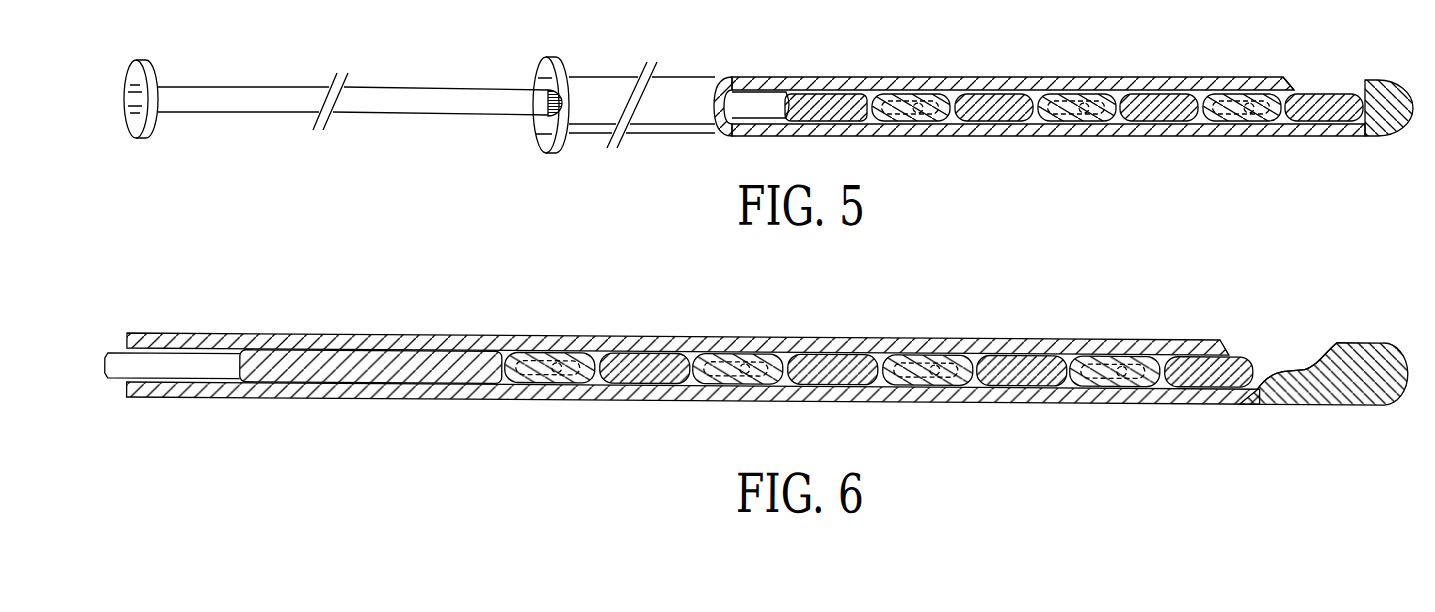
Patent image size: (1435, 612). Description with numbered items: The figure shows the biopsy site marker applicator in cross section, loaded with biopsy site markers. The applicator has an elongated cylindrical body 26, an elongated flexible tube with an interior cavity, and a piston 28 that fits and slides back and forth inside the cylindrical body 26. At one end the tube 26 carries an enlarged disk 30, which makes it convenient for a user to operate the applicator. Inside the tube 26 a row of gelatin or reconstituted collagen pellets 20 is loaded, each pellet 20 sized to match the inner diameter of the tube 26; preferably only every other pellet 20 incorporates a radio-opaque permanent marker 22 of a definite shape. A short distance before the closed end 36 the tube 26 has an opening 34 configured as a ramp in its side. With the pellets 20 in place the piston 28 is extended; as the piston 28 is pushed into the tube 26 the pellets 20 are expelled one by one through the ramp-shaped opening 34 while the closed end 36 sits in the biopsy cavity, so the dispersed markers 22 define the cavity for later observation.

In FIG. 5, the gelatin body or pellet 20 is at (895, 93).
In FIG. 6, the gelatin body or pellet 20 is at (563, 354).
In FIG. 6, the radio-opaque marker 22 is at (548, 372).
In FIG. 5, the elongated cylindrical body 26 is at (815, 77).
In FIG. 6, the elongated cylindrical body 26 is at (320, 333).
In FIG. 5, the piston 28 is at (440, 118).
In FIG. 6, the piston 28 is at (450, 370).
In FIG. 5, the enlarged disk 30 is at (536, 76).
In FIG. 5, the opening 34 is at (1296, 90).
In FIG. 6, the opening 34 is at (1308, 360).
In FIG. 5, the closed end 36 is at (1388, 120).
In FIG. 6, the closed end 36 is at (1402, 384).